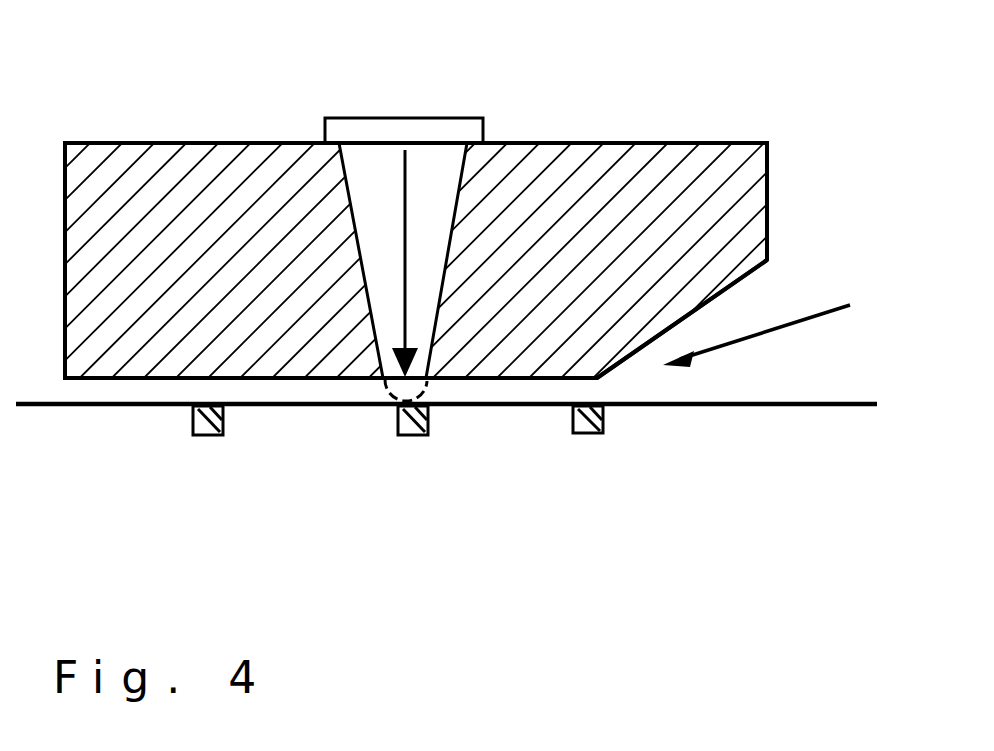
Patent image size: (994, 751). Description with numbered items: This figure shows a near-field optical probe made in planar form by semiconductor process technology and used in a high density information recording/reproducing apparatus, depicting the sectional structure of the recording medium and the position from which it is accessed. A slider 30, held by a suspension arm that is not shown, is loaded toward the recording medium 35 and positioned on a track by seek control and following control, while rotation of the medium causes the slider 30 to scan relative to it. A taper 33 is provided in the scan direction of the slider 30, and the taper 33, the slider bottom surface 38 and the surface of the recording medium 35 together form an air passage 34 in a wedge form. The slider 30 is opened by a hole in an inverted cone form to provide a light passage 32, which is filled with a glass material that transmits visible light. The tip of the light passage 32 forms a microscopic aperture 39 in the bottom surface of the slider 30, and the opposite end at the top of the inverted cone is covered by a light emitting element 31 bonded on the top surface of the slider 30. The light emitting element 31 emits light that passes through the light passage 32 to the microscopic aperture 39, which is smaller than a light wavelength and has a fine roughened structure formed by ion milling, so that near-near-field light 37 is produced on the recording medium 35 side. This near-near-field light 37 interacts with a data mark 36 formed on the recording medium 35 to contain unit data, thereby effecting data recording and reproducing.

The slider 30 is at (663, 188).
The light emitting element 31 is at (408, 118).
The light passage 32 is at (440, 183).
The taper 33 is at (753, 309).
The air passage 34 is at (783, 336).
The recording medium 35 is at (448, 430).
The data mark 36 is at (592, 428).
The near-near-field light 37 is at (428, 384).
The slider bottom surface 38 is at (342, 358).
The microscopic aperture 39 is at (400, 378).